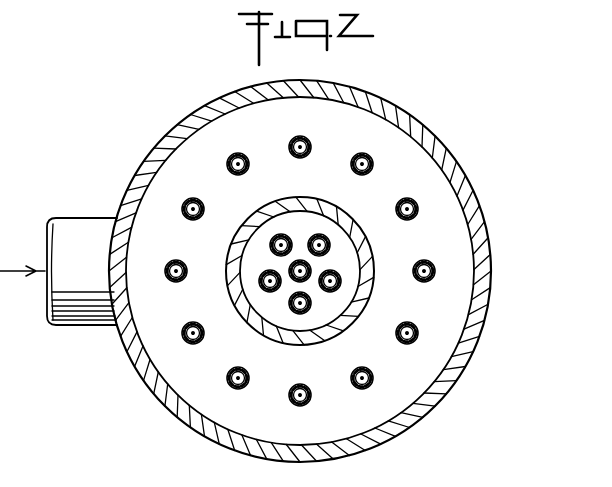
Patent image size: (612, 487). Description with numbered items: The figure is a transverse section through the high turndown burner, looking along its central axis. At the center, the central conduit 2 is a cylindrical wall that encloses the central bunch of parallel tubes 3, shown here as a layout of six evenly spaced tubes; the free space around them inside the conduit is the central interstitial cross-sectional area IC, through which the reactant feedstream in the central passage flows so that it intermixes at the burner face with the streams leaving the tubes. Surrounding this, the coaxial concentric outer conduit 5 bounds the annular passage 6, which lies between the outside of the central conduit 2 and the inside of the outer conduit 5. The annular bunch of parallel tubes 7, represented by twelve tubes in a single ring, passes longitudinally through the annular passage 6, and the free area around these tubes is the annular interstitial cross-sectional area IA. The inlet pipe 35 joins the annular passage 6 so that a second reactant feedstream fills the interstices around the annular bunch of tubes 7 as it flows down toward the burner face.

The central conduit 2 is at (309, 199).
The central bunch of parallel tubes 3 is at (341, 279).
The outer conduit 5 is at (410, 116).
The annular passage 6 is at (421, 167).
The annular bunch of parallel tubes 7 is at (367, 366).
The inlet pipe 35 is at (73, 217).
The annular interstitial cross-sectional area IA is at (466, 268).
The central interstitial cross-sectional area IC is at (308, 317).